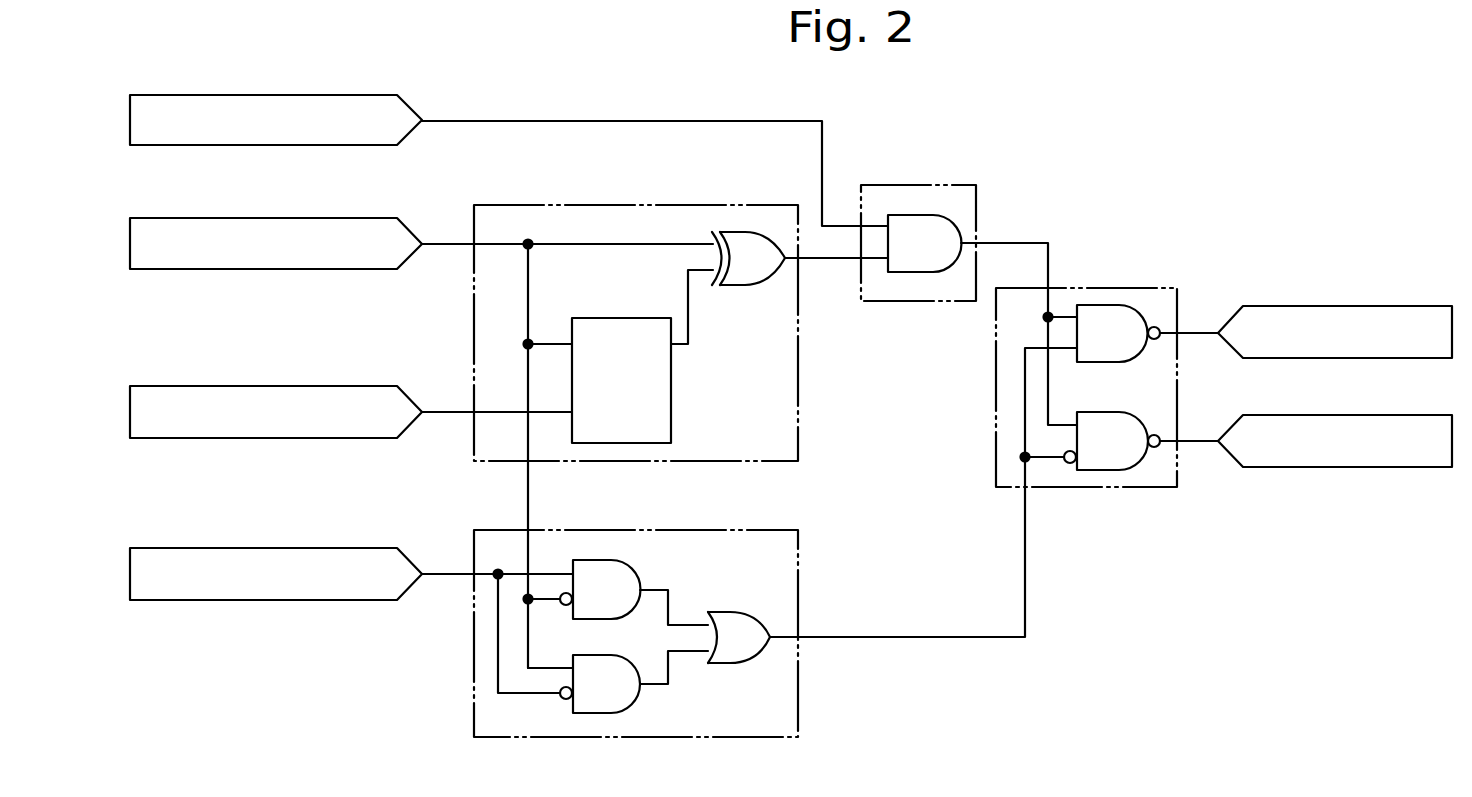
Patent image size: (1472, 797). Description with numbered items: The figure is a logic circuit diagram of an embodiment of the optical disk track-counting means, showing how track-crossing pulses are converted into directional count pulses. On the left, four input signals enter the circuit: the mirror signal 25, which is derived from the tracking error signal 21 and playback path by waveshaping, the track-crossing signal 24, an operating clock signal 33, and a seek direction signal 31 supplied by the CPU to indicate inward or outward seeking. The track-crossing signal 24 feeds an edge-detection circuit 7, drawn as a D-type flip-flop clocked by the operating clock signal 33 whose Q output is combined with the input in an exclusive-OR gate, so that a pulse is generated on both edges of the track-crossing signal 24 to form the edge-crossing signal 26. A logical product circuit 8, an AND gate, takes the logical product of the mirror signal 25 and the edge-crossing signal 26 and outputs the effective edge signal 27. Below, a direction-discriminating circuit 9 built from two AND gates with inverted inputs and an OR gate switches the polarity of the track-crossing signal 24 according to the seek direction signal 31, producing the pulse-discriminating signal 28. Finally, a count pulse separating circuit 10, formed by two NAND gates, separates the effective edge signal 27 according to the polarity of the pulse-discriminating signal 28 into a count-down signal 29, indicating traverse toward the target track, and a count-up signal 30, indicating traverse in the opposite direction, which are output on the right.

The tracking error signal 21 is at (308, 95).
The track-crossing signal 24 is at (290, 218).
The operating clock signal 33 is at (288, 385).
The seek direction signal 31 is at (290, 547).
The mirror signal 25 is at (478, 121).
The edge-detection circuit 7 is at (538, 205).
The edge-crossing signal 26 is at (825, 258).
The logical product circuit 8 is at (915, 185).
The effective edge signal 27 is at (1020, 243).
The count pulse separating circuit 10 is at (1138, 288).
The count-down signal 29 is at (1313, 306).
The count-up signal 30 is at (1323, 415).
The direction-discriminating circuit 9 is at (595, 530).
The pulse-discriminating signal 28 is at (898, 637).